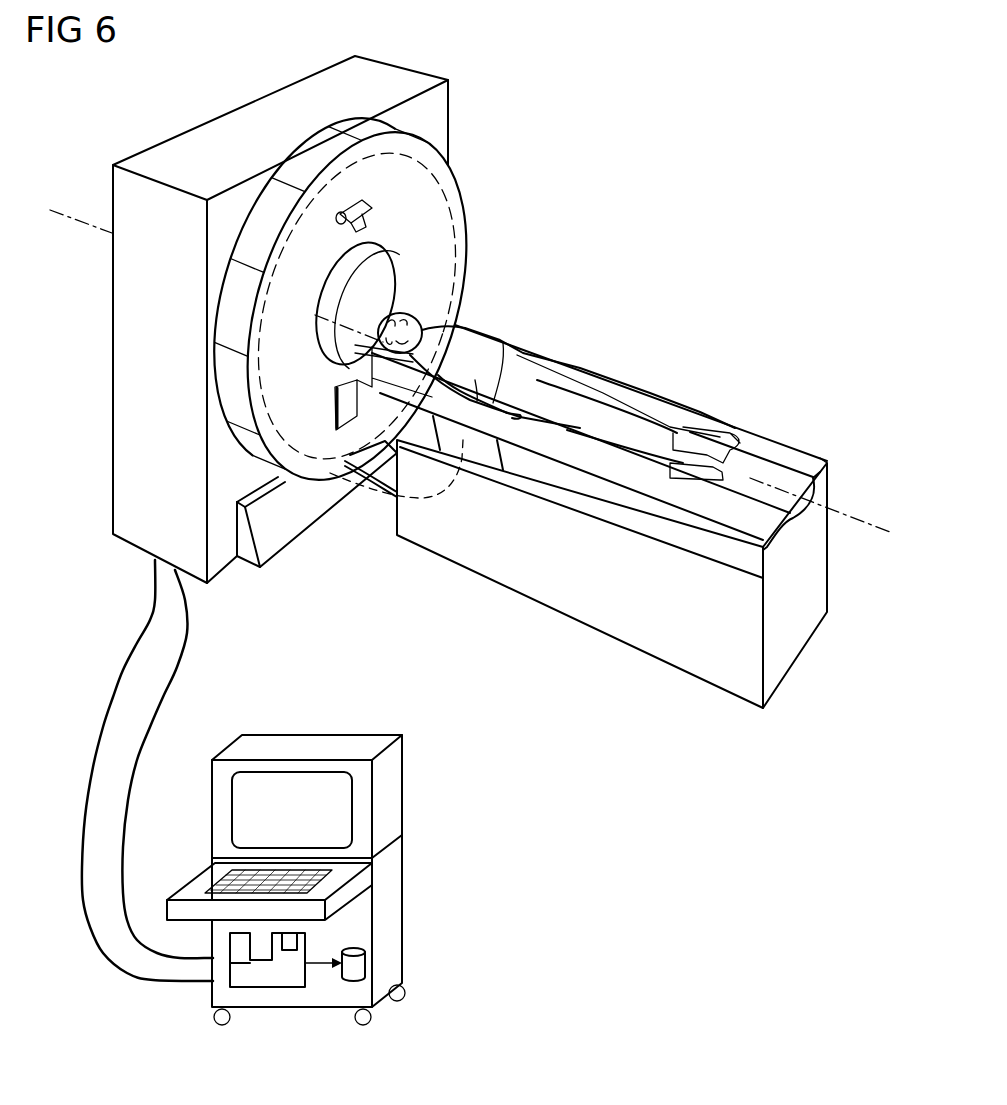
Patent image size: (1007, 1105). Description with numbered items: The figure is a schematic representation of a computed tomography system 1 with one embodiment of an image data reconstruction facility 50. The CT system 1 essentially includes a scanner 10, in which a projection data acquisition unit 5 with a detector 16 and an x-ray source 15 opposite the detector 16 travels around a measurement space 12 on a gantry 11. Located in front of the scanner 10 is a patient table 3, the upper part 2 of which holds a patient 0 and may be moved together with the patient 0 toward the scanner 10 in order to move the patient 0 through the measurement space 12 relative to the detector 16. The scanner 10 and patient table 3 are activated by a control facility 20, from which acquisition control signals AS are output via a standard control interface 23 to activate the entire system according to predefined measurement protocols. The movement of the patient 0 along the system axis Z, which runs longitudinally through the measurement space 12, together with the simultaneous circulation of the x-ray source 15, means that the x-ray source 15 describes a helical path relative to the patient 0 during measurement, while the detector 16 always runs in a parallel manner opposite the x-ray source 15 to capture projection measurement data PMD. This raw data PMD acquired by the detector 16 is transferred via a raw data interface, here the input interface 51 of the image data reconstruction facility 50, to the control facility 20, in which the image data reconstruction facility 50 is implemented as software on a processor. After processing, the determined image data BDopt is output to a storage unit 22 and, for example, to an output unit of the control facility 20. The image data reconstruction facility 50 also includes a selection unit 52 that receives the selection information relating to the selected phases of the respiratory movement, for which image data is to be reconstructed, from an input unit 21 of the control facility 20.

The computed tomography system 1 is at (668, 192).
The patient 0 is at (568, 372).
The upper part of the patient table 2 is at (735, 447).
The patient table 3 is at (580, 607).
The projection data acquisition unit 5 is at (330, 186).
The scanner 10 is at (137, 550).
The gantry 11 is at (462, 220).
The measurement space 12 is at (345, 280).
The x-ray source 15 is at (368, 205).
The detector 16 is at (363, 445).
The control facility 20 is at (342, 706).
The input unit 21 is at (212, 893).
The storage unit 22 is at (366, 974).
The control interface 23 is at (240, 948).
The image data reconstruction facility 50 is at (278, 985).
The input interface 51 is at (232, 985).
The selection unit 52 is at (298, 942).
The system axis Z is at (845, 507).
The projection measurement data PMD is at (108, 707).
The acquisition control signals AS is at (164, 703).
The image data BDopt is at (313, 967).